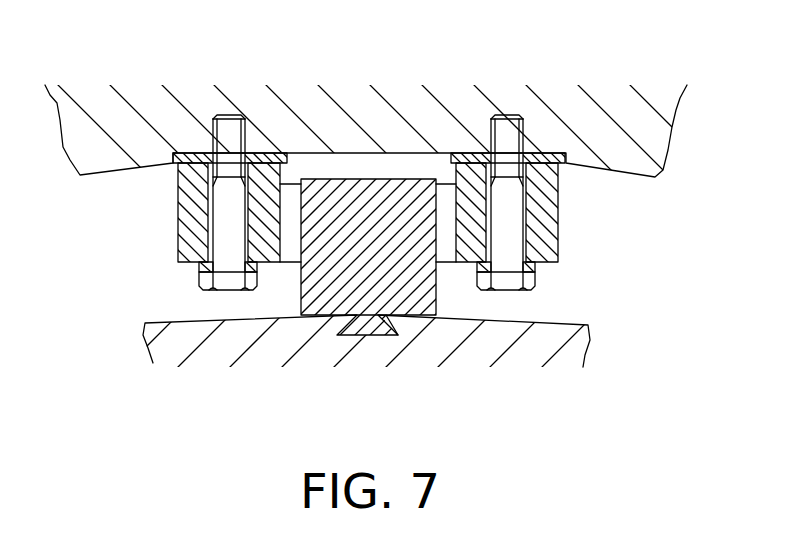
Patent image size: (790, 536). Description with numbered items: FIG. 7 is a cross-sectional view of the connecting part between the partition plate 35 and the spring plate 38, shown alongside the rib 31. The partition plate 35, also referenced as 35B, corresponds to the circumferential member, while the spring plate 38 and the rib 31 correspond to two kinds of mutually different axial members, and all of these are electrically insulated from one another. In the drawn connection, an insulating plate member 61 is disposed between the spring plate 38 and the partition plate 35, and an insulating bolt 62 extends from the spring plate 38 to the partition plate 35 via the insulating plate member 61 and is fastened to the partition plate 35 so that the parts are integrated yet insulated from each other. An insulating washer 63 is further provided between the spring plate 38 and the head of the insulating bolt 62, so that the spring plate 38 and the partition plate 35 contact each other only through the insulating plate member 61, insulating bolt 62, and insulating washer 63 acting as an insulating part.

The upper frame member 35B is at (387, 94).
The partition plate 35 is at (408, 98).
The spring plate 38 is at (178, 232).
The insulating plate member 61 is at (261, 152).
The insulating bolt 62 is at (228, 281).
The insulating washer 63 is at (203, 268).
The rib 31 is at (325, 306).